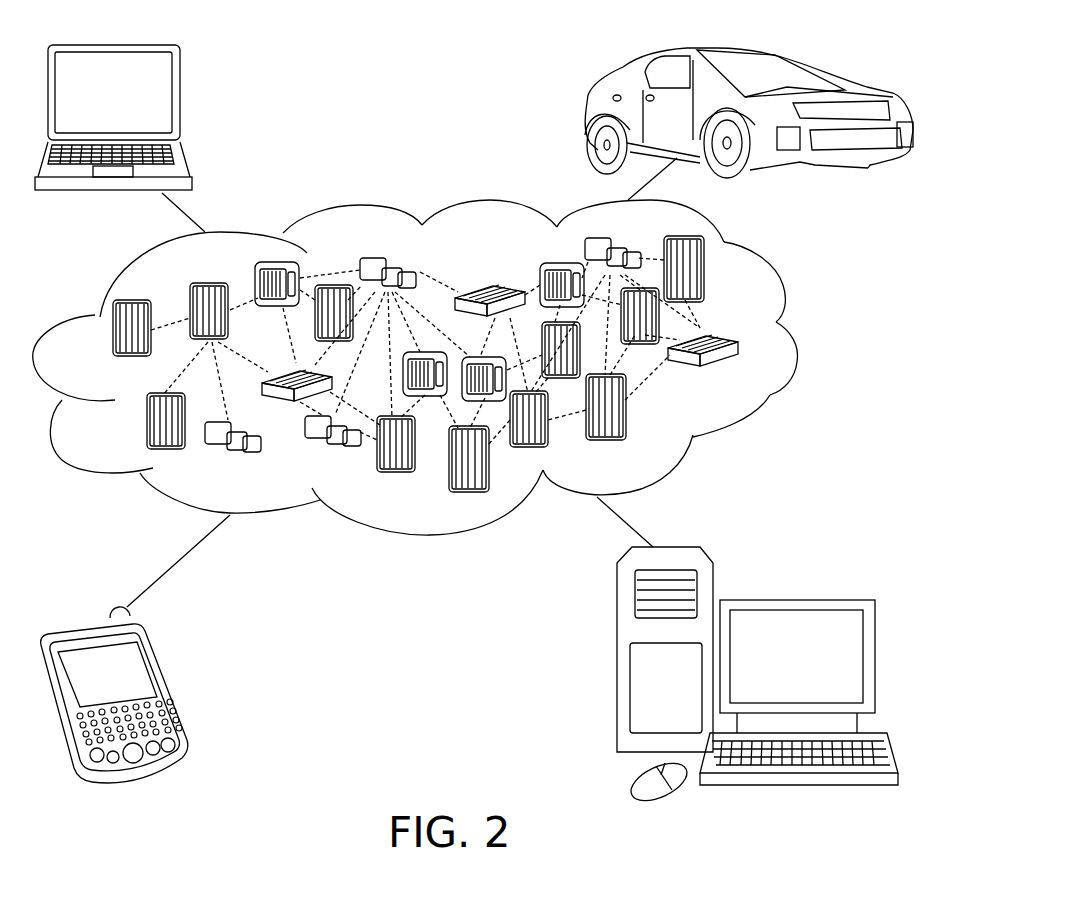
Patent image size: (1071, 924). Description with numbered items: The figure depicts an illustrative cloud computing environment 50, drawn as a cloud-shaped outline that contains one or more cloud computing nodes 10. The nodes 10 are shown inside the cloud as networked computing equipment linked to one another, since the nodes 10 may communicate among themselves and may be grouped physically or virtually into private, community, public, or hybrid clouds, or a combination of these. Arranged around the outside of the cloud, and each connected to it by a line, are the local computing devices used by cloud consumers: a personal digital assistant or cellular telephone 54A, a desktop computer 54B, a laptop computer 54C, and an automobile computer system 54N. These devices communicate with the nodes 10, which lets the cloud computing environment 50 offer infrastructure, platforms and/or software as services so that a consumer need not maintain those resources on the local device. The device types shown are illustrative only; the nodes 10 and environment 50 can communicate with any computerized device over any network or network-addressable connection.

The cloud computing node 10 is at (747, 372).
The cloud computing environment 50 is at (795, 339).
The personal digital assistant or cellular telephone 54A is at (167, 687).
The desktop computer 54B is at (793, 600).
The laptop computer 54C is at (180, 103).
The automobile computer system 54N is at (588, 113).